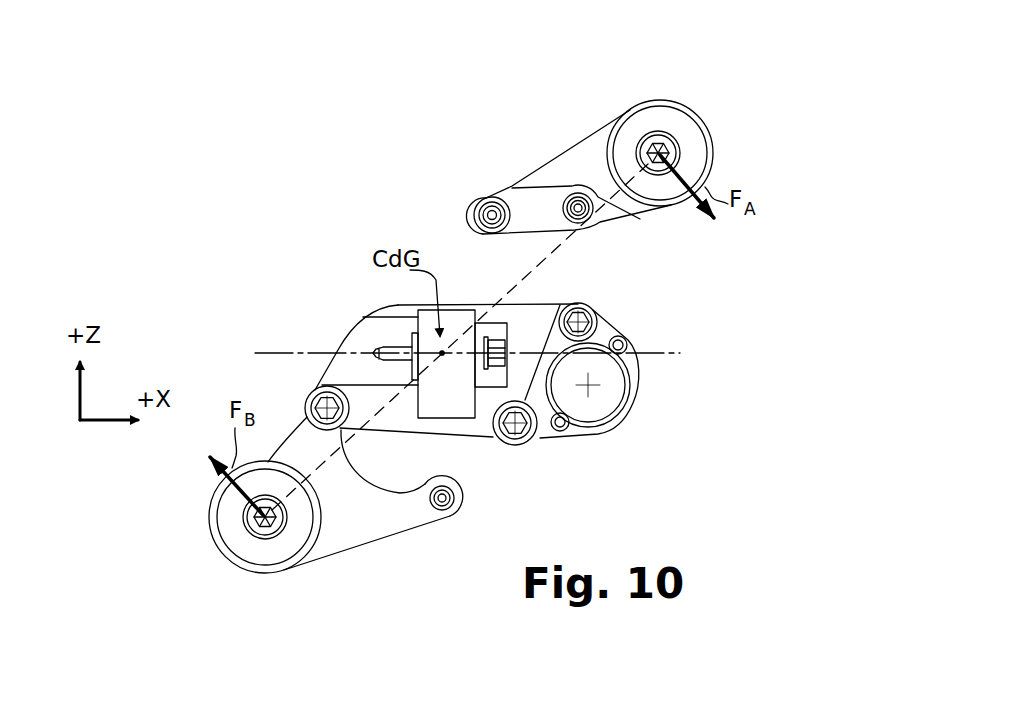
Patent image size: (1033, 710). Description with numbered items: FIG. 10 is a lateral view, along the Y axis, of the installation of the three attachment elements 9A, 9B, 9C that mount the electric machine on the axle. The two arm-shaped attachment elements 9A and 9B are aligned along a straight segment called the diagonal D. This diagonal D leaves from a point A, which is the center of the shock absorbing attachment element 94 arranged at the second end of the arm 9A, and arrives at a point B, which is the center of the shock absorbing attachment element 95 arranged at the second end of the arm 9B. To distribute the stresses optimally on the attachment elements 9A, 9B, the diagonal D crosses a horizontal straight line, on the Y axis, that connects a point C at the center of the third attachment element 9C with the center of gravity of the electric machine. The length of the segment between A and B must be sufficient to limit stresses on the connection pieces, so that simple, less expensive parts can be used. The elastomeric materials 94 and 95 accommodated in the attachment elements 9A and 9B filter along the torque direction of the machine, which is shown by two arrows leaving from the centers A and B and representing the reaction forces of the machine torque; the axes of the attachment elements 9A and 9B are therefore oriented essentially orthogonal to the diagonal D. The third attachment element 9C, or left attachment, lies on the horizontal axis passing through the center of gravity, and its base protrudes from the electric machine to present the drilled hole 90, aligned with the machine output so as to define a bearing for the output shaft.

The attachment element 9A is at (690, 112).
The attachment element 9B is at (340, 548).
The third attachment element 9C is at (490, 445).
The shock absorbing attachment element 94 is at (628, 138).
The shock absorbing attachment element 95 is at (235, 540).
The drilled hole 90 is at (597, 397).
The point A is at (678, 142).
The point B is at (277, 535).
The point C is at (445, 360).
The diagonal D is at (542, 262).